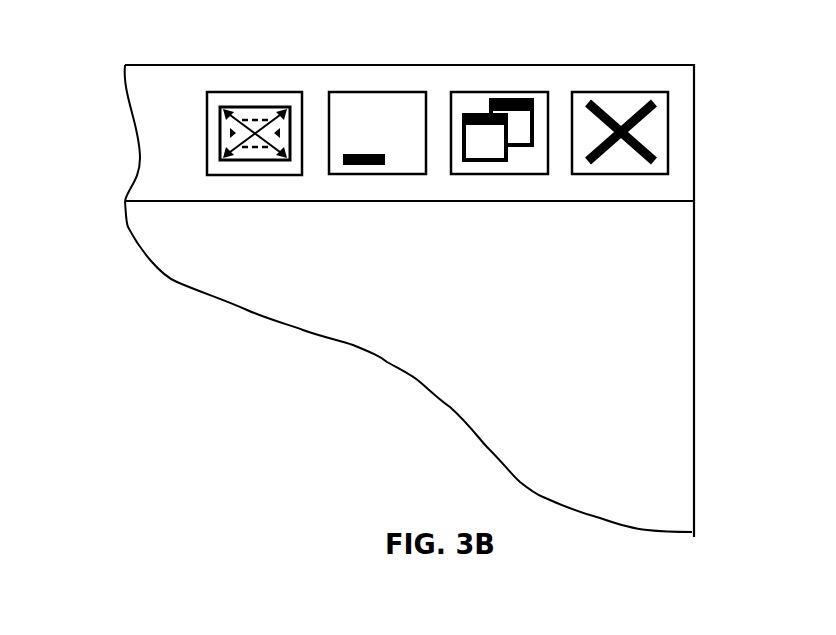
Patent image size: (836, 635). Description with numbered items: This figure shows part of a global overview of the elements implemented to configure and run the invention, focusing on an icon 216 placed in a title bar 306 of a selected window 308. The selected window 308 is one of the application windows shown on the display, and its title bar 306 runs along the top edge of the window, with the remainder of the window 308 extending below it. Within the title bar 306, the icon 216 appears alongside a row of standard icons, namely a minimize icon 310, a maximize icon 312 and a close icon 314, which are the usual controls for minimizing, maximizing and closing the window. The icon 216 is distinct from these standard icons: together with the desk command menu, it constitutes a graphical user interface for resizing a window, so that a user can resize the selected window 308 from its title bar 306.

The icon 216 is at (268, 88).
The title bar 306 is at (140, 158).
The selected window 308 is at (700, 383).
The minimize icon 310 is at (383, 87).
The maximize icon 312 is at (512, 86).
The close icon 314 is at (626, 86).